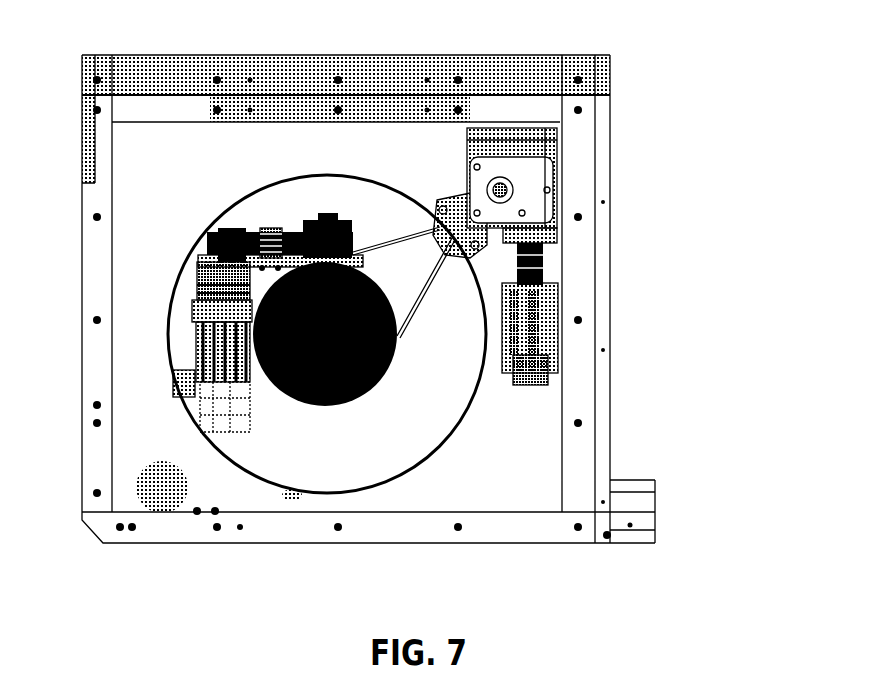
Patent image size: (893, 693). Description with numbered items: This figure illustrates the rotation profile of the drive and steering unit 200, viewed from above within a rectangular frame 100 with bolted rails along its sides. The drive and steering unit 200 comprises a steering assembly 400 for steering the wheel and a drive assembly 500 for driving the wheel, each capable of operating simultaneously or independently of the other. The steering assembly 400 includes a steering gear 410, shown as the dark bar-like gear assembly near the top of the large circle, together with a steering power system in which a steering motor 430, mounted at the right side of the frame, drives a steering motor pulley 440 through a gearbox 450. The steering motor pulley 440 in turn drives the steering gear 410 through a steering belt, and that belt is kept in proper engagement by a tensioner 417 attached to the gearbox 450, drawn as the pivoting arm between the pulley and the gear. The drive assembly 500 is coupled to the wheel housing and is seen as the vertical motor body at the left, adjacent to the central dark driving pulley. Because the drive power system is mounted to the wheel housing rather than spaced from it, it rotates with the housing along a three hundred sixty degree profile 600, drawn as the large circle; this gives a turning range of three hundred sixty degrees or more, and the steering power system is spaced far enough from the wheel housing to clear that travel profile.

The frame 100 is at (535, 545).
The drive and steering unit 200 is at (662, 183).
The steering assembly 400 is at (573, 250).
The steering gear 410 is at (247, 233).
The tensioner 417 is at (435, 203).
The steering motor 430 is at (535, 335).
The steering motor pulley 440 is at (505, 185).
The gearbox 450 is at (540, 203).
The drive assembly 500 is at (188, 270).
The profile 600 is at (463, 423).